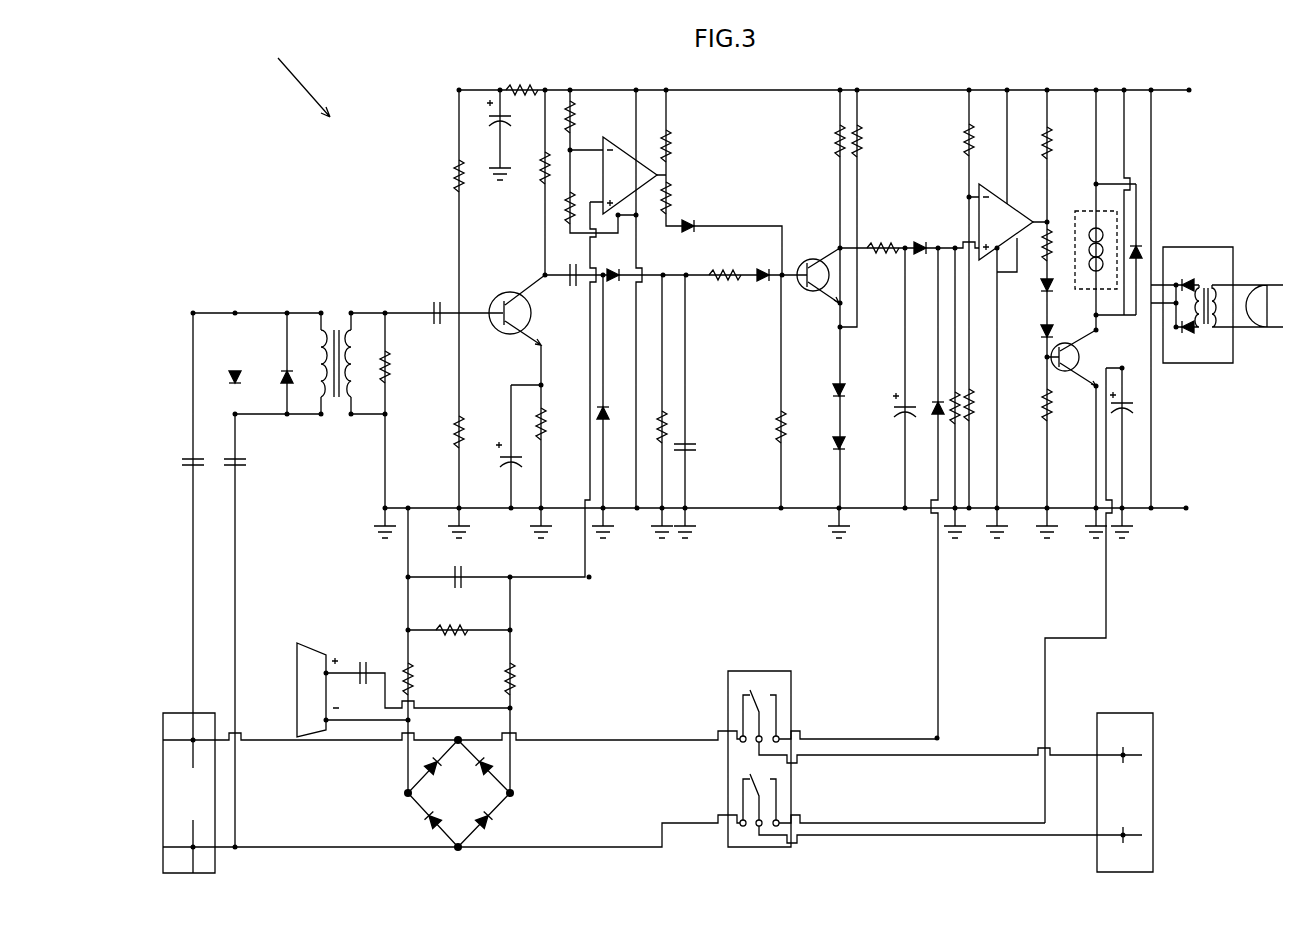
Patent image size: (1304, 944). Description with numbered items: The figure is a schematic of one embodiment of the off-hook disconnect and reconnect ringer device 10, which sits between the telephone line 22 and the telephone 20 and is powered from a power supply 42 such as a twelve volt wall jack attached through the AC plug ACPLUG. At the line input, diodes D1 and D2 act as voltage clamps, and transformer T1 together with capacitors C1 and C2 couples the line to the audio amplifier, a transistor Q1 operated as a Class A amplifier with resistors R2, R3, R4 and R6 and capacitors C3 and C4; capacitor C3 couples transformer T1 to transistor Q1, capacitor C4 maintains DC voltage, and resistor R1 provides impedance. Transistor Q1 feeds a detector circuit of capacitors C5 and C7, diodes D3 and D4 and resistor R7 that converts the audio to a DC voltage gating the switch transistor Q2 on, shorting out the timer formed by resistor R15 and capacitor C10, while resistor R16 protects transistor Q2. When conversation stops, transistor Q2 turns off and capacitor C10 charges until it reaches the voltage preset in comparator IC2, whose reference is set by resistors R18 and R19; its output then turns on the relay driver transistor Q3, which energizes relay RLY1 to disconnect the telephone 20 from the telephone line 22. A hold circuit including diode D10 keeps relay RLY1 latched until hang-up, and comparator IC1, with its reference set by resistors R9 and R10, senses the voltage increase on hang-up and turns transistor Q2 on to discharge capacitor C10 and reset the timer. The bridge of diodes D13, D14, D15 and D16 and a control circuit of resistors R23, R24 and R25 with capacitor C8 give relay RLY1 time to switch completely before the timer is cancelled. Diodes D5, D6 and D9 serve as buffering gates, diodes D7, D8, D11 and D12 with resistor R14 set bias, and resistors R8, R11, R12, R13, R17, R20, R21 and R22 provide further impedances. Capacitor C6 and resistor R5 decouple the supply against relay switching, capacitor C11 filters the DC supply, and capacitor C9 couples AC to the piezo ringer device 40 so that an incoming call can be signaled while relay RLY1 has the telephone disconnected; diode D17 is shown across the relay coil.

The off-hook disconnect and reconnect ringer device 10 is at (293, 72).
The telephone 20 is at (1122, 711).
The telephone line 22 is at (175, 711).
The ringer device 40 is at (306, 638).
The power supply 42 is at (1205, 243).
The AC plug ACPLUG is at (1262, 275).
The resistor R1 is at (391, 366).
The resistor R2 is at (452, 180).
The resistor R3 is at (451, 445).
The resistor R4 is at (541, 175).
The resistor R5 is at (523, 87).
The resistor R6 is at (548, 410).
The resistor R7 is at (657, 415).
The resistor R8 is at (727, 267).
The resistor R9 is at (575, 125).
The resistor R10 is at (574, 205).
The resistor R11 is at (672, 157).
The resistor R12 is at (673, 208).
The resistor R13 is at (773, 412).
The resistor R14 is at (862, 140).
The resistor R15 is at (833, 137).
The resistor R16 is at (884, 240).
The resistor R17 is at (950, 398).
The resistor R18 is at (975, 397).
The resistor R19 is at (963, 140).
The resistor R20 is at (1049, 135).
The resistor R21 is at (1049, 240).
The resistor R22 is at (1040, 400).
The resistor R23 is at (413, 676).
The resistor R24 is at (447, 624).
The resistor R25 is at (516, 676).
The capacitor C1 is at (182, 458).
The capacitor C2 is at (250, 458).
The capacitor C3 is at (437, 298).
The capacitor C4 is at (497, 451).
The capacitor C5 is at (570, 262).
The capacitor C6 is at (506, 129).
The capacitor C7 is at (690, 440).
The capacitor C8 is at (462, 572).
The capacitor C9 is at (363, 658).
The capacitor C10 is at (896, 401).
The capacitor C11 is at (1129, 399).
The diode D1 is at (229, 378).
The diode D2 is at (281, 379).
The diode D3 is at (609, 398).
The diode D4 is at (613, 267).
The diode D5 is at (762, 267).
The diode D6 is at (695, 220).
The diode D7 is at (828, 386).
The diode D8 is at (828, 442).
The diode D9 is at (921, 240).
The diode D10 is at (935, 400).
The diode D11 is at (1040, 286).
The diode D12 is at (1040, 332).
The diode D13 is at (420, 768).
The diode D14 is at (497, 765).
The diode D15 is at (425, 822).
The diode D16 is at (496, 822).
The diode D17 is at (1140, 254).
The transistor Q1 is at (510, 290).
The transistor Q2 is at (816, 260).
The transistor Q3 is at (1073, 342).
The comparator IC1 is at (610, 133).
The comparator IC2 is at (1020, 197).
The transformer T1 is at (341, 308).
The relay RLY1 is at (1107, 216).